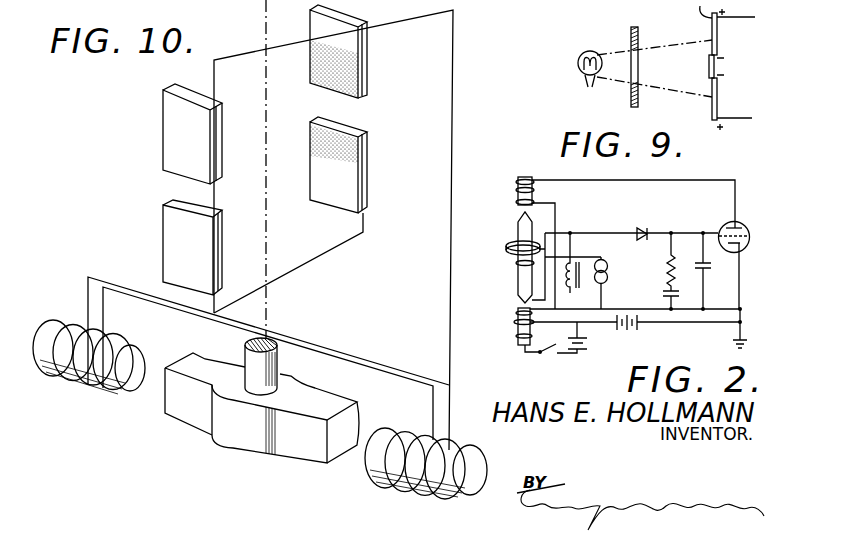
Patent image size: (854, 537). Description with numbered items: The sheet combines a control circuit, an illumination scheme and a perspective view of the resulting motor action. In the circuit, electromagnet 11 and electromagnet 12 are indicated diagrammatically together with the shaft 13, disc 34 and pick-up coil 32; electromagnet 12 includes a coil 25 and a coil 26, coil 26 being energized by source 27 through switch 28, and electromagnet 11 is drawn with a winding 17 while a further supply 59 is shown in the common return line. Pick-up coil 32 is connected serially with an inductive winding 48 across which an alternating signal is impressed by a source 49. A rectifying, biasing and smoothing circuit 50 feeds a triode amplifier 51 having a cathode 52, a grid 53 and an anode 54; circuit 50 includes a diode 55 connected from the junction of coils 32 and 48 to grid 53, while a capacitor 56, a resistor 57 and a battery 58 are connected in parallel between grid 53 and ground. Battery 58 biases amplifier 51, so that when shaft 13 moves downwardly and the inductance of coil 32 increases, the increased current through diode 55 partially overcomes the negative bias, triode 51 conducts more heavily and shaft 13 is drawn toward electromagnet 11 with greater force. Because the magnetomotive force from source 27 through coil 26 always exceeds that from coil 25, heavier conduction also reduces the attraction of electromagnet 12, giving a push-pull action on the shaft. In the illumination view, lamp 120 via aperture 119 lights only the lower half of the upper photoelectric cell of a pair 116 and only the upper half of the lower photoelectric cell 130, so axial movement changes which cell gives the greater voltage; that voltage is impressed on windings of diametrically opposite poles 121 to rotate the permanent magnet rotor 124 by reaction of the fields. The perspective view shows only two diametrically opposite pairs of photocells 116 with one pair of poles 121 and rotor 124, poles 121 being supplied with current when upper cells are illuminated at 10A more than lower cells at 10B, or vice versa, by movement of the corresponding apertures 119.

In FIG. 10, the upper cell illumination region 10A is at (310, 68).
In FIG. 10, the lower cell illumination region 10B is at (310, 142).
In FIG. 10, the pair of photoelectric cells 116 is at (373, 115).
In FIG. 9, the pair of photoelectric cells 116 is at (727, 71).
In FIG. 10, the diametrically opposite poles 121 is at (125, 383).
In FIG. 10, the permanent magnet rotor 124 is at (307, 457).
In FIG. 9, the lamp 120 is at (594, 53).
In FIG. 9, the aperture 119 is at (640, 52).
In FIG. 9, the lower photoelectric cell 130 is at (712, 112).
In FIG. 2, the electromagnet 11 is at (517, 175).
In FIG. 2, the electrode of element 11 17 is at (518, 201).
In FIG. 2, the shaft 13 is at (517, 230).
In FIG. 2, the disc 34 is at (505, 249).
In FIG. 2, the pick-up coil 32 is at (518, 265).
In FIG. 2, the coil 25 is at (518, 316).
In FIG. 2, the electromagnet 12 is at (505, 335).
In FIG. 2, the coil 26 is at (517, 342).
In FIG. 2, the switch 28 is at (557, 355).
In FIG. 2, the source 27 is at (590, 346).
In FIG. 2, the battery 59 is at (631, 331).
In FIG. 2, the inductive winding 48 is at (566, 291).
In FIG. 2, the source 49 is at (604, 262).
In FIG. 2, the diode 55 is at (648, 221).
In FIG. 2, the rectifying, biasing and smoothing circuit 50 is at (677, 226).
In FIG. 2, the anode 54 is at (724, 228).
In FIG. 2, the triode amplifier 51 is at (750, 221).
In FIG. 2, the grid 53 is at (749, 244).
In FIG. 2, the cathode 52 is at (736, 247).
In FIG. 2, the capacitor 56 is at (698, 265).
In FIG. 2, the resistor 57 is at (667, 278).
In FIG. 2, the battery 58 is at (663, 293).